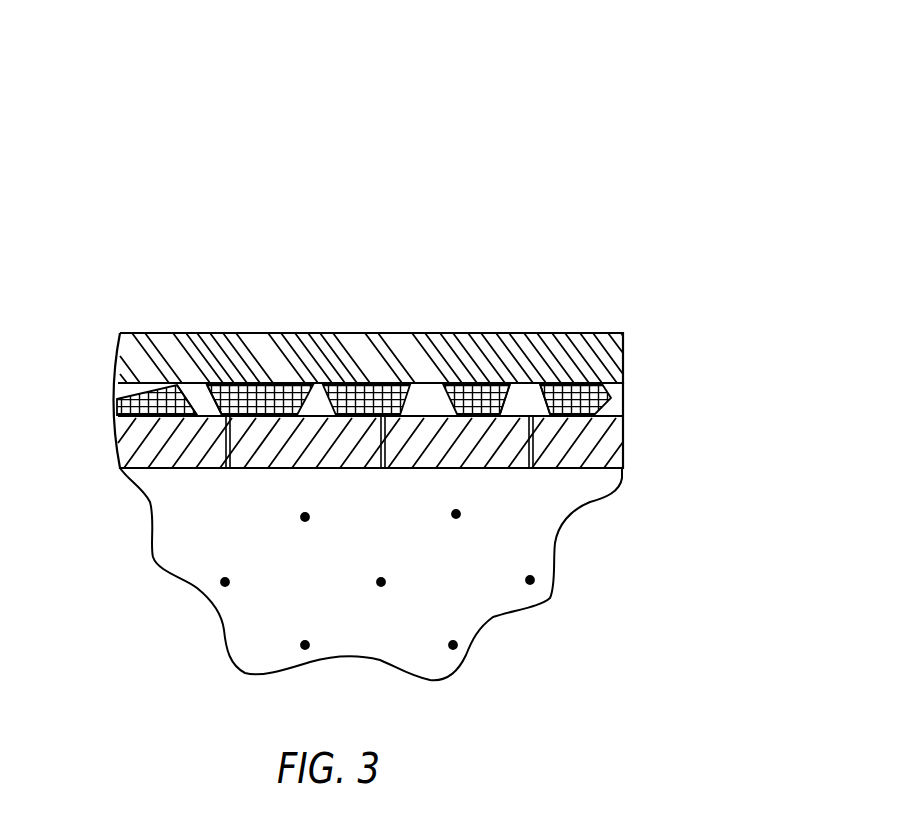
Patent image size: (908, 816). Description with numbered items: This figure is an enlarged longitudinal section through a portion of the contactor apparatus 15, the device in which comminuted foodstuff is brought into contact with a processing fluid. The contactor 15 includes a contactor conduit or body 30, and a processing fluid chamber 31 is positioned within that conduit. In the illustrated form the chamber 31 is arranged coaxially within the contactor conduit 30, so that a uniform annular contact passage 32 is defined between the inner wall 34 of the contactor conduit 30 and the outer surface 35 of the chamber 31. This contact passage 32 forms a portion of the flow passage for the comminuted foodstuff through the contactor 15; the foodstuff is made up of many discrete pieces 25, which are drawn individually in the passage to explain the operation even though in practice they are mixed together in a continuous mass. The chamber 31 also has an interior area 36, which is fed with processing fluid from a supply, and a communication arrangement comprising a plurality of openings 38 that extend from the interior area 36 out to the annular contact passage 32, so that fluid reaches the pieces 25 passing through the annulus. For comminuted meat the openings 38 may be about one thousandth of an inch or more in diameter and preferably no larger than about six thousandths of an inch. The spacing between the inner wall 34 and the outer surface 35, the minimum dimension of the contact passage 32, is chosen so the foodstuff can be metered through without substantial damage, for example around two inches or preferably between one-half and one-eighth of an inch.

The contactor apparatus 15 is at (790, 172).
The discrete pieces 25 is at (478, 378).
The contactor conduit 30 is at (237, 333).
The processing fluid chamber 31 is at (180, 470).
The annular contact passage 32 is at (192, 383).
The inner wall 34 is at (533, 378).
The outer surface 35 is at (622, 404).
The interior area 36 is at (368, 630).
The openings 38 is at (531, 470).